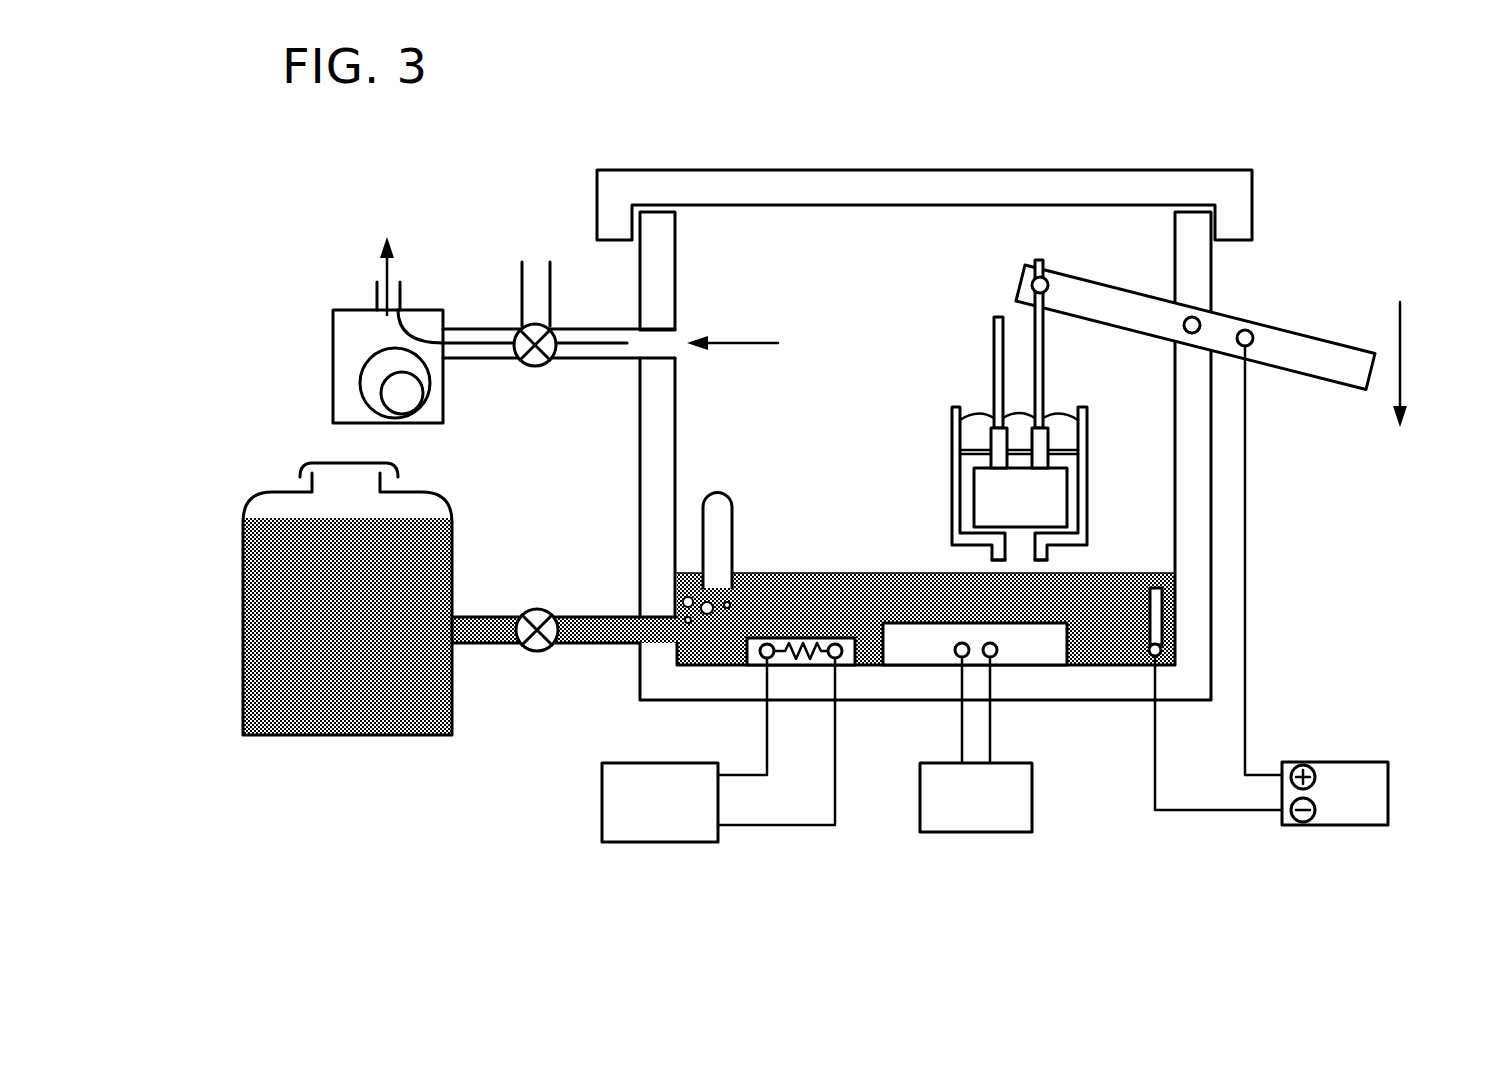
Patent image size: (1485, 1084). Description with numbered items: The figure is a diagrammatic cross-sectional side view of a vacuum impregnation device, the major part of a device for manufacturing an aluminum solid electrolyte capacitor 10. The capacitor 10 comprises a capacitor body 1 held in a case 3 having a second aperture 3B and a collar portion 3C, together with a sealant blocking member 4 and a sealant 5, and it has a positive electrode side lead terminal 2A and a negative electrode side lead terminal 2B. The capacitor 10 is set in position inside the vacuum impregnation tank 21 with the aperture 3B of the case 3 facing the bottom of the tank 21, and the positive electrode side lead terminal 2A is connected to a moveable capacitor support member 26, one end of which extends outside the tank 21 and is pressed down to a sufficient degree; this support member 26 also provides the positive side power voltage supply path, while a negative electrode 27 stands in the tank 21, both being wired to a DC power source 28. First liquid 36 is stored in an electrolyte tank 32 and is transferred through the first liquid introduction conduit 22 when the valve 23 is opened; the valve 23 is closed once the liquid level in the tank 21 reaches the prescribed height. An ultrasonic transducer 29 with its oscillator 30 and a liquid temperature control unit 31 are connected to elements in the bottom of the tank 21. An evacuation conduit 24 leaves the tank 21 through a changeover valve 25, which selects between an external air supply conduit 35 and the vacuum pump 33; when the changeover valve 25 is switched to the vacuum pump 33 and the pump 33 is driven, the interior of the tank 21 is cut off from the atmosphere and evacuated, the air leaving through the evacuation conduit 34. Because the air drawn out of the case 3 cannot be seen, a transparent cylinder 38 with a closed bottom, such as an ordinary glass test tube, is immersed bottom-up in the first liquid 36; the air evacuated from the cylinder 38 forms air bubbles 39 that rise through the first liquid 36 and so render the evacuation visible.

The capacitor body 1 is at (1058, 497).
The positive electrode side lead terminal 2A is at (1047, 362).
The negative electrode side lead terminal 2B is at (994, 328).
The case 3 is at (952, 500).
The second aperture 3B is at (1017, 547).
The collar portion 3C is at (992, 553).
The sealant blocking member 4 is at (967, 445).
The sealant 5 is at (982, 427).
The aluminum solid electrolyte capacitor 10 is at (1165, 557).
The vacuum impregnation tank 21 is at (1197, 272).
The first liquid introduction conduit 22 is at (602, 628).
The valve 23 is at (537, 609).
The evacuation conduit 24 is at (480, 338).
The changeover valve 25 is at (543, 368).
The moveable capacitor support member 26 is at (1347, 350).
The negative electrode 27 is at (1158, 615).
The DC power source 28 is at (1333, 760).
The ultrasonic transducer 29 is at (920, 797).
The oscillator 30 is at (1045, 652).
The liquid temperature control unit 31 is at (602, 797).
The electrolyte tank 32 is at (423, 490).
The vacuum pump 33 is at (333, 368).
The evacuation conduit 34 is at (377, 292).
The external air supply conduit 35 is at (550, 320).
The first liquid 36 is at (823, 587).
The transparent cylinder 38 is at (720, 488).
The air bubbles 39 is at (688, 597).